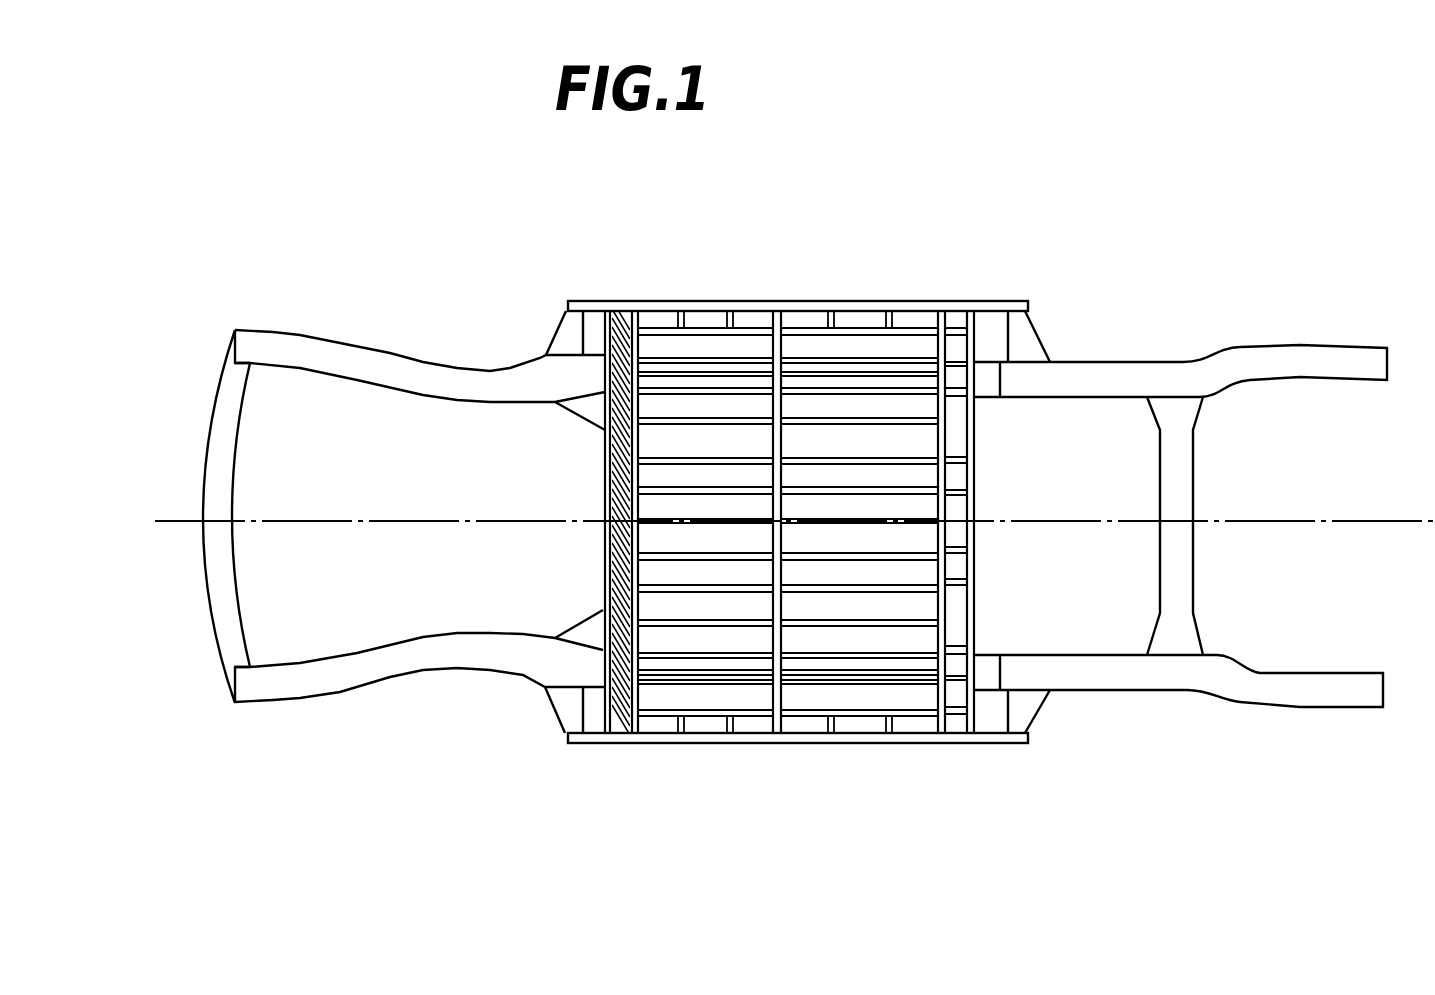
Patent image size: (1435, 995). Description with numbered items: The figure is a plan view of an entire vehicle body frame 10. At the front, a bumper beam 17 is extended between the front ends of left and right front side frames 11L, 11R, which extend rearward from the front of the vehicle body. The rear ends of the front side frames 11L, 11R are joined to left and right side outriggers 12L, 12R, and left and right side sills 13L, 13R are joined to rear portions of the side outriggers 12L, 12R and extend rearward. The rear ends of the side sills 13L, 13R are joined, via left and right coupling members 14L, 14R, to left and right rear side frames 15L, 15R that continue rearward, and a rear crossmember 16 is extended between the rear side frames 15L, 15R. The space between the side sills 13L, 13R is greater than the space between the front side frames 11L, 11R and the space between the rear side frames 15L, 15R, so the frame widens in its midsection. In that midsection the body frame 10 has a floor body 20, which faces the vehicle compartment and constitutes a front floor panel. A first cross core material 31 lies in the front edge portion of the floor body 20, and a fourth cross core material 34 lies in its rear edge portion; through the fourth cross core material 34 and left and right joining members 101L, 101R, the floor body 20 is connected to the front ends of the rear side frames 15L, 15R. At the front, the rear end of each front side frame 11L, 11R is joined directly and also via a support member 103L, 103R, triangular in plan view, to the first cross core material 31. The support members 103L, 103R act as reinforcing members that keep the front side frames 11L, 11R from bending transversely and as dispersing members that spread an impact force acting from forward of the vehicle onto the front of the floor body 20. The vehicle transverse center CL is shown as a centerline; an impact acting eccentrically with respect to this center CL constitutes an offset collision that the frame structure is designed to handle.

The body frame 10 is at (320, 150).
The right front side frame 11R is at (315, 355).
The left front side frame 11L is at (328, 690).
The right side outrigger 12R is at (557, 335).
The left side outrigger 12L is at (563, 707).
The right side sill 13R is at (742, 302).
The left side sill 13L is at (745, 745).
The right coupling member 14R is at (1028, 332).
The left coupling member 14L is at (1028, 720).
The right rear side frame 15R is at (1305, 345).
The left rear side frame 15L is at (1320, 707).
The rear crossmember 16 is at (1185, 472).
The bumper beam 17 is at (210, 445).
The floor body 20 is at (870, 347).
The first cross core material 31 is at (600, 487).
The fourth cross core material 34 is at (973, 477).
The right joining member 101R is at (985, 388).
The left joining member 101L is at (985, 655).
The right support member 103R is at (585, 408).
The left support member 103L is at (577, 630).
The vehicle transverse center CL is at (1403, 522).